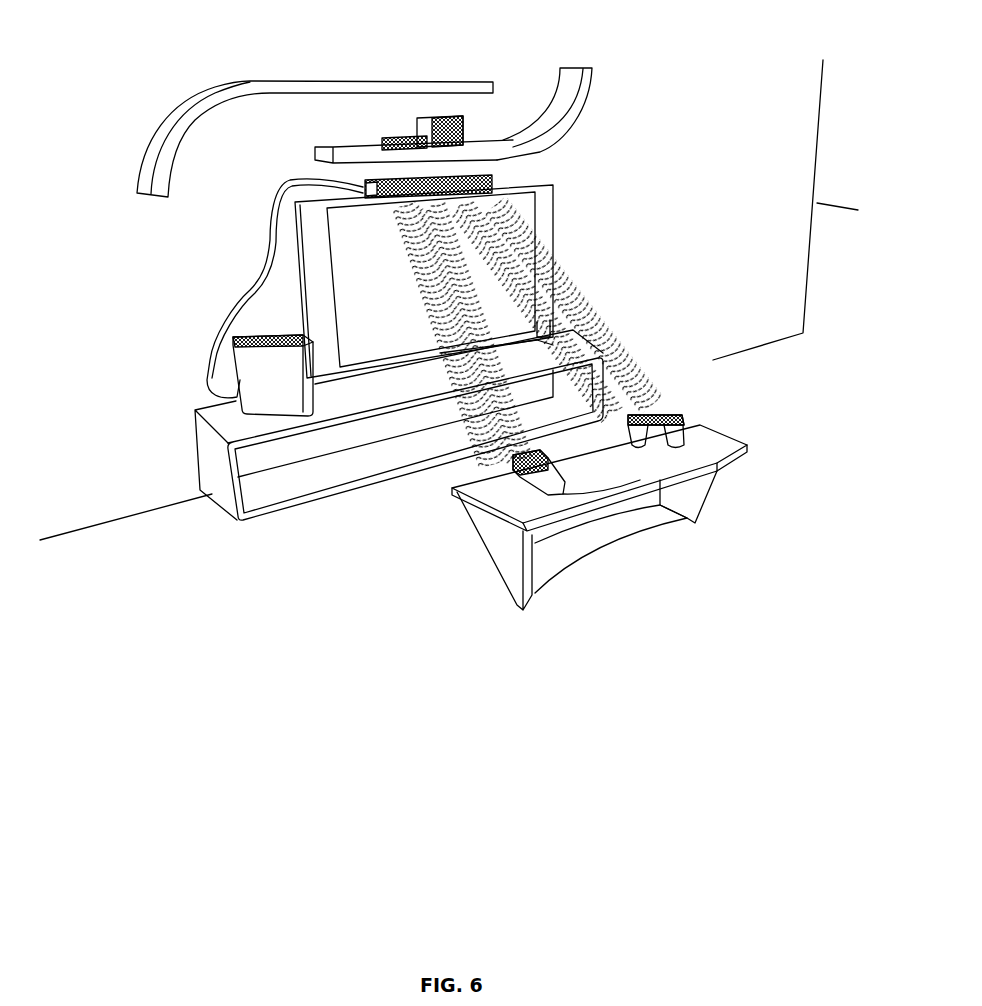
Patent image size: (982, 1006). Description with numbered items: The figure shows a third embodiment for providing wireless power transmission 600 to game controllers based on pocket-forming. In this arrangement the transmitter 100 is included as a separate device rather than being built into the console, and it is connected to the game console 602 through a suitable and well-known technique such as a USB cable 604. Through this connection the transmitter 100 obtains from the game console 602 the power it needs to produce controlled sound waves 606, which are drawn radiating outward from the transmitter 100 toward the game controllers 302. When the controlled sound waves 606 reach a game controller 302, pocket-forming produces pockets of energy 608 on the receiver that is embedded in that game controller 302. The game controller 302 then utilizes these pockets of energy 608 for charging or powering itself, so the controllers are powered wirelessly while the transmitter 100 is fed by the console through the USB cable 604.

The wireless power transmission 600 is at (170, 84).
The transmitter 100 is at (492, 178).
The game console 602 is at (296, 353).
The USB cable 604 is at (263, 270).
The controlled sound waves 606 is at (443, 320).
The pockets of energy 608 is at (508, 452).
The game controller 302 is at (688, 428).